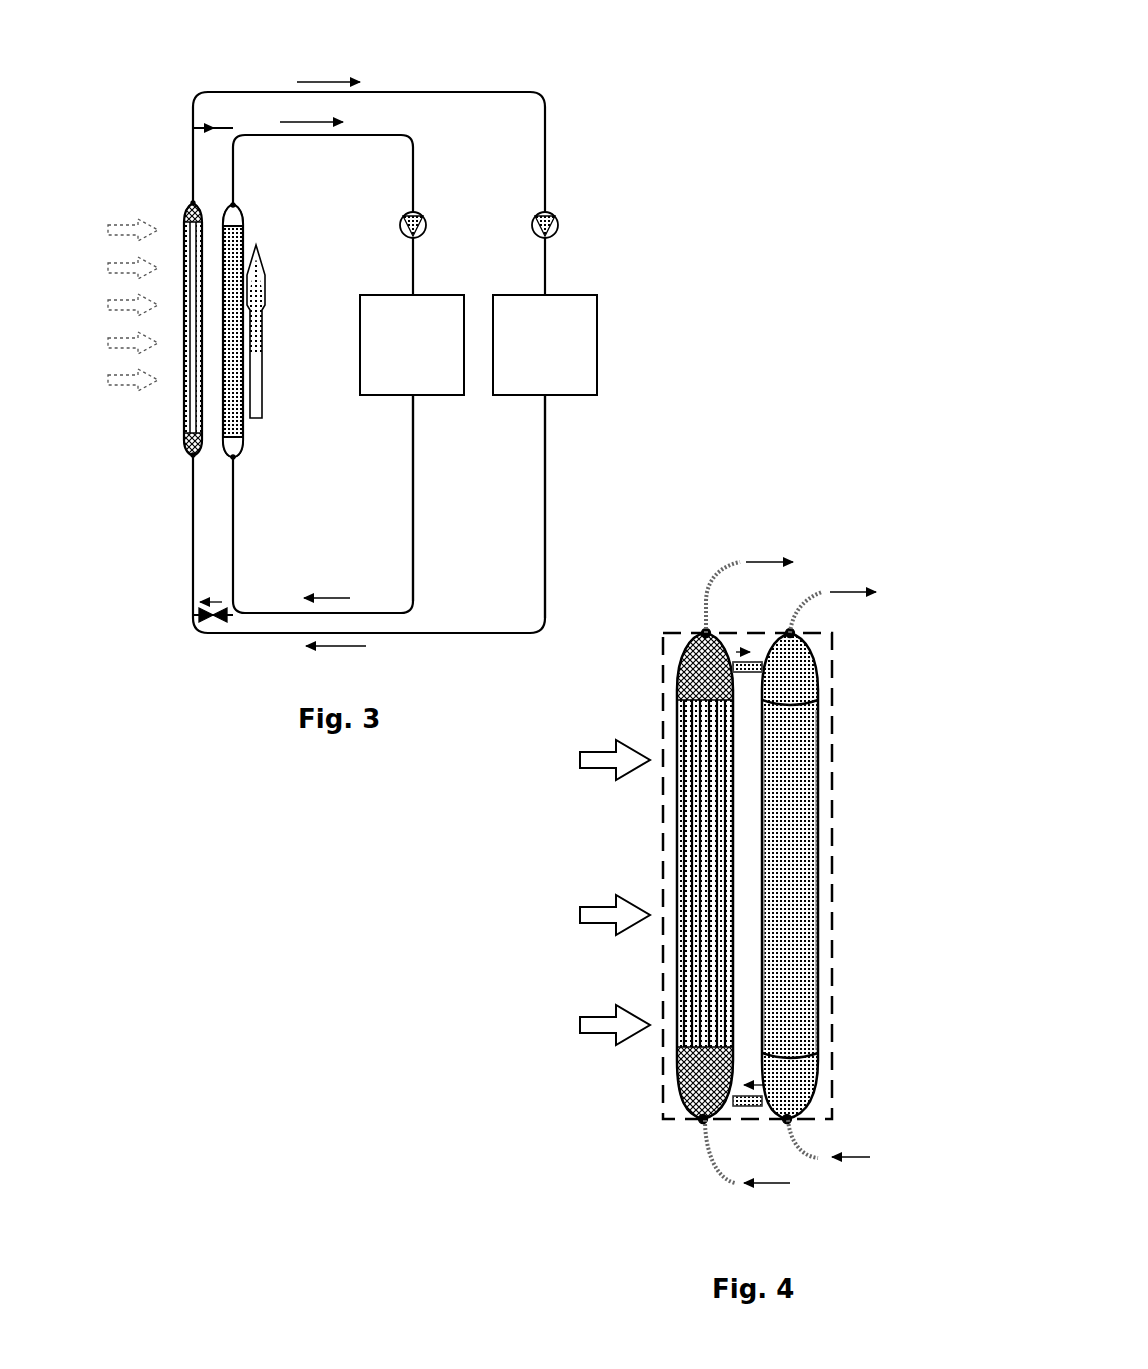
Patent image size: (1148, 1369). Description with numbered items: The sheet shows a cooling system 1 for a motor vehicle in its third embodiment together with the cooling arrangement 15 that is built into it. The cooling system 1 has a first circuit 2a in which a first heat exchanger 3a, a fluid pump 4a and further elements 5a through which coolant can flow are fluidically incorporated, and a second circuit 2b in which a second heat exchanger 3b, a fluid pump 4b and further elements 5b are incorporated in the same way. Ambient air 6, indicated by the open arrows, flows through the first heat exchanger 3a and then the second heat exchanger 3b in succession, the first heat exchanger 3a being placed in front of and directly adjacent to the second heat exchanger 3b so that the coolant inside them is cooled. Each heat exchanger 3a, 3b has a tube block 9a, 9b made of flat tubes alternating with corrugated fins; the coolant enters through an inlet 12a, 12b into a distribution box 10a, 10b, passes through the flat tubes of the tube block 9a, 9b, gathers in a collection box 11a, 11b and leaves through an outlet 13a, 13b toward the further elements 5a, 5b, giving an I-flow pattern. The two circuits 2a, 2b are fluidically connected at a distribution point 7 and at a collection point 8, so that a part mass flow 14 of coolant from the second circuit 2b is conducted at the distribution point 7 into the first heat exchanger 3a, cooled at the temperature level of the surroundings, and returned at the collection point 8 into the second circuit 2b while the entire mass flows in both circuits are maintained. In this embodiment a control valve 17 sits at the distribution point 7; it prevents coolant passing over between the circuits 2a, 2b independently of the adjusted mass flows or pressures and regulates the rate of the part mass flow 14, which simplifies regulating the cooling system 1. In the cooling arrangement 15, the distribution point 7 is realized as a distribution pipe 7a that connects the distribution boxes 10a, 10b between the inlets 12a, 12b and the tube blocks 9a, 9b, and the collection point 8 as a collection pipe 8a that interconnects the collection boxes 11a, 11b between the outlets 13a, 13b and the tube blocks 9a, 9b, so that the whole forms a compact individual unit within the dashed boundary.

In FIG. 3, the cooling system 1 is at (644, 114).
In FIG. 3, the first circuit 2a is at (552, 508).
In FIG. 4, the first circuit 2a is at (762, 557).
In FIG. 3, the second circuit 2b is at (420, 505).
In FIG. 4, the second circuit 2b is at (843, 590).
In FIG. 3, the first heat exchanger 3a is at (180, 352).
In FIG. 4, the first heat exchanger 3a is at (708, 851).
In FIG. 3, the second heat exchanger 3b is at (232, 310).
In FIG. 4, the second heat exchanger 3b is at (790, 834).
In FIG. 3, the fluid pump 4a is at (556, 214).
In FIG. 3, the fluid pump 4b is at (424, 214).
In FIG. 3, the further elements 5a is at (558, 358).
In FIG. 3, the further elements 5b is at (430, 358).
In FIG. 3, the ambient air 6 is at (125, 345).
In FIG. 4, the ambient air 6 is at (600, 926).
In FIG. 3, the distribution point 7 is at (233, 614).
In FIG. 4, the distribution point 7 is at (742, 1107).
In FIG. 4, the distribution pipe 7a is at (747, 1101).
In FIG. 3, the collection point 8 is at (195, 126).
In FIG. 4, the collection point 8 is at (747, 667).
In FIG. 4, the collection pipe 8a is at (745, 668).
In FIG. 3, the tube block 9a is at (192, 253).
In FIG. 4, the tube block 9a is at (697, 796).
In FIG. 3, the tube block 9b is at (232, 252).
In FIG. 4, the tube block 9b is at (794, 766).
In FIG. 3, the distribution box 10a is at (190, 437).
In FIG. 4, the distribution box 10a is at (698, 1070).
In FIG. 3, the distribution box 10b is at (243, 438).
In FIG. 4, the distribution box 10b is at (790, 1091).
In FIG. 3, the collection box 11a is at (190, 214).
In FIG. 4, the collection box 11a is at (696, 690).
In FIG. 3, the collection box 11b is at (243, 216).
In FIG. 4, the collection box 11b is at (790, 678).
In FIG. 3, the inlet 12a is at (192, 456).
In FIG. 4, the inlet 12a is at (702, 1121).
In FIG. 3, the inlet 12b is at (236, 458).
In FIG. 4, the inlet 12b is at (790, 1121).
In FIG. 3, the outlet 13a is at (193, 200).
In FIG. 4, the outlet 13a is at (705, 630).
In FIG. 3, the outlet 13b is at (236, 203).
In FIG. 4, the outlet 13b is at (795, 631).
In FIG. 3, the part mass flow 14 is at (216, 126).
In FIG. 4, the part mass flow 14 is at (736, 652).
In FIG. 4, the cooling arrangement 15 is at (838, 872).
In FIG. 3, the control valve 17 is at (203, 631).